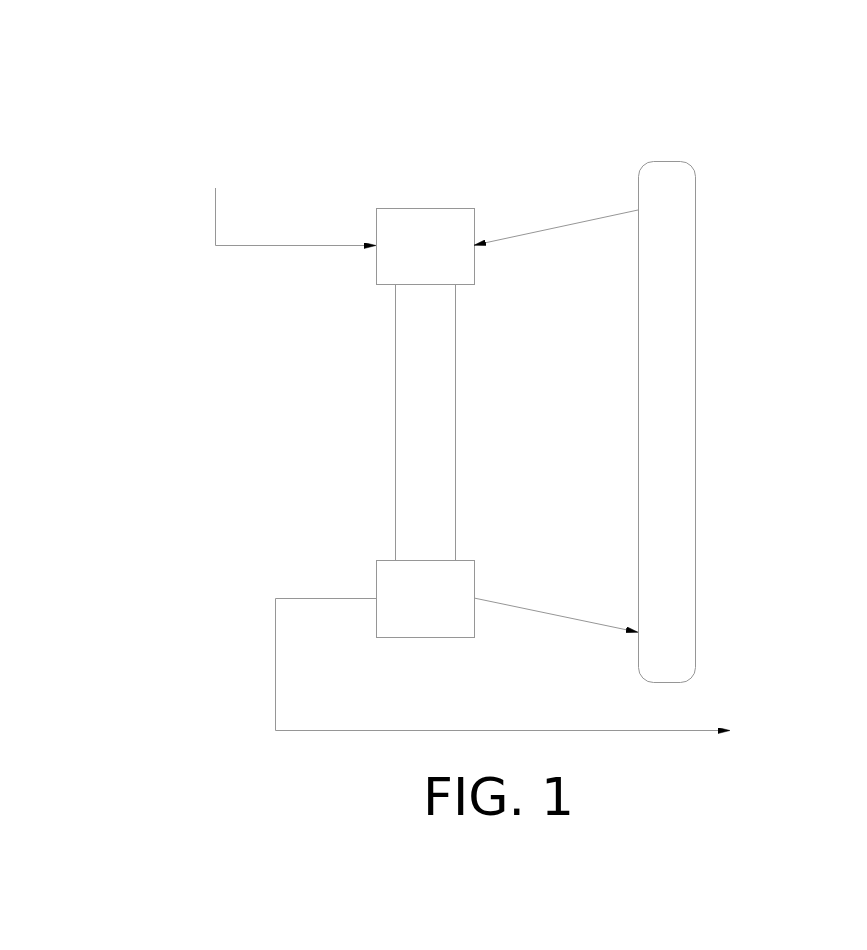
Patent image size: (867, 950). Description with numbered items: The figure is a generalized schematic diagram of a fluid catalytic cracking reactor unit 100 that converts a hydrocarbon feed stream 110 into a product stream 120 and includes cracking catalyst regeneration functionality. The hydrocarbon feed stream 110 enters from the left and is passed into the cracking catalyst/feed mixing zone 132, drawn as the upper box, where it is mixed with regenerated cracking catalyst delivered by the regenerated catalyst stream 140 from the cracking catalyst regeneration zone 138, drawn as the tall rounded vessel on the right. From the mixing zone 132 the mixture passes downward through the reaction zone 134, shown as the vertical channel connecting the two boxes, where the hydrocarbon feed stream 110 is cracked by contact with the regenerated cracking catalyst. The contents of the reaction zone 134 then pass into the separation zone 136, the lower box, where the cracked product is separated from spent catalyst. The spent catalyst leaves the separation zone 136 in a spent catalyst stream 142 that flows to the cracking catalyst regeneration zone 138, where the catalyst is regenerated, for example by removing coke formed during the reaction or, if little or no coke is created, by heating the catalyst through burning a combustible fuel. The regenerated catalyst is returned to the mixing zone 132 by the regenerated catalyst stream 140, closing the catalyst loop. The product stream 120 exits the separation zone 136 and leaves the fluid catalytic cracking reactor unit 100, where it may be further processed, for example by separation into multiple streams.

The fluid catalytic cracking reactor unit 100 is at (747, 128).
The hydrocarbon feed stream 110 is at (215, 213).
The product stream 120 is at (297, 597).
The cracking catalyst/feed mixing zone 132 is at (434, 208).
The reaction zone 134 is at (395, 425).
The separation zone 136 is at (433, 637).
The cracking catalyst regeneration zone 138 is at (638, 425).
The regenerated catalyst stream 140 is at (549, 228).
The spent catalyst stream 142 is at (545, 612).